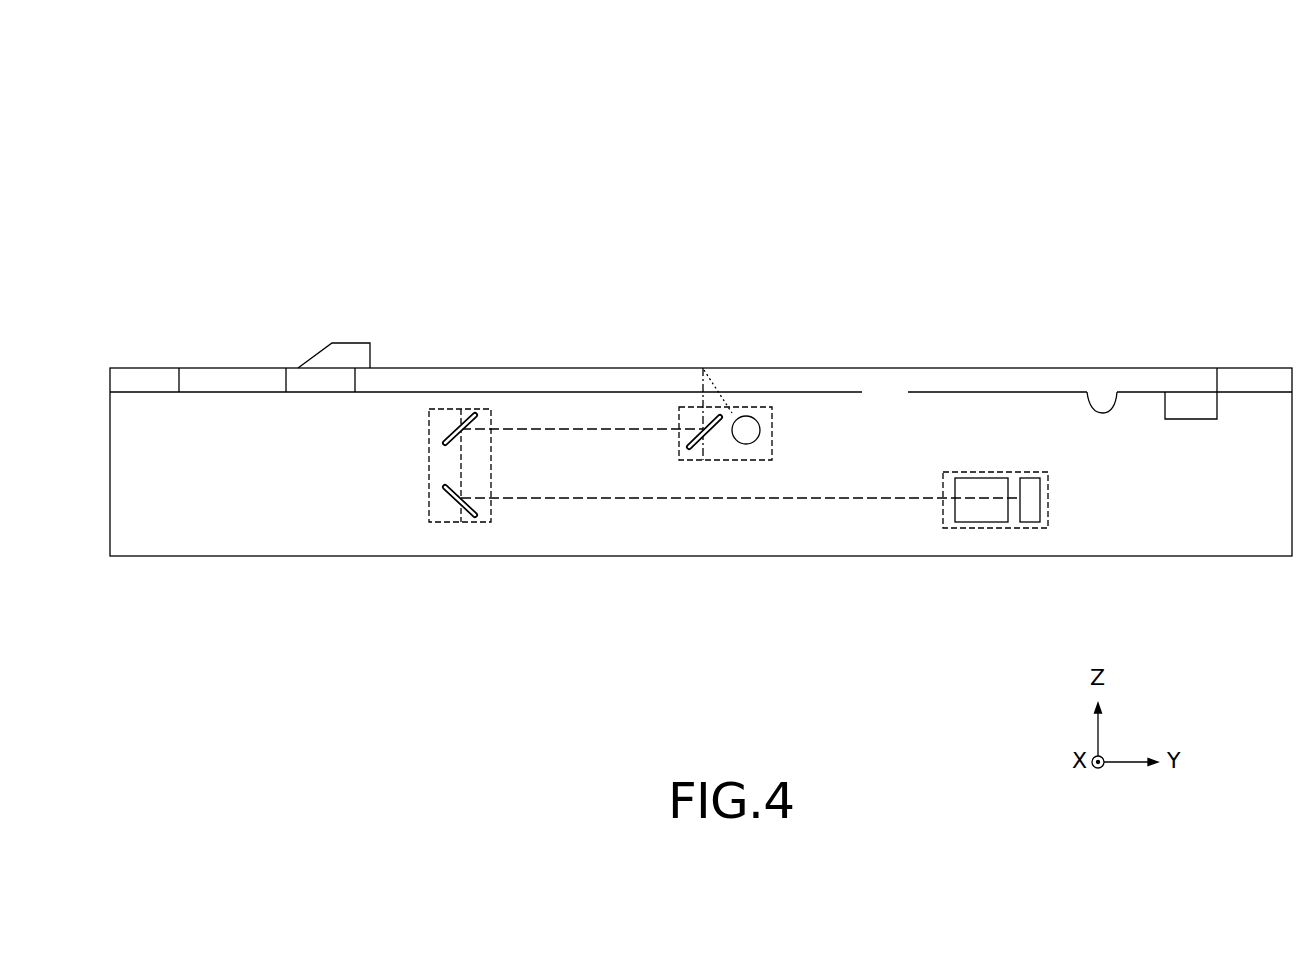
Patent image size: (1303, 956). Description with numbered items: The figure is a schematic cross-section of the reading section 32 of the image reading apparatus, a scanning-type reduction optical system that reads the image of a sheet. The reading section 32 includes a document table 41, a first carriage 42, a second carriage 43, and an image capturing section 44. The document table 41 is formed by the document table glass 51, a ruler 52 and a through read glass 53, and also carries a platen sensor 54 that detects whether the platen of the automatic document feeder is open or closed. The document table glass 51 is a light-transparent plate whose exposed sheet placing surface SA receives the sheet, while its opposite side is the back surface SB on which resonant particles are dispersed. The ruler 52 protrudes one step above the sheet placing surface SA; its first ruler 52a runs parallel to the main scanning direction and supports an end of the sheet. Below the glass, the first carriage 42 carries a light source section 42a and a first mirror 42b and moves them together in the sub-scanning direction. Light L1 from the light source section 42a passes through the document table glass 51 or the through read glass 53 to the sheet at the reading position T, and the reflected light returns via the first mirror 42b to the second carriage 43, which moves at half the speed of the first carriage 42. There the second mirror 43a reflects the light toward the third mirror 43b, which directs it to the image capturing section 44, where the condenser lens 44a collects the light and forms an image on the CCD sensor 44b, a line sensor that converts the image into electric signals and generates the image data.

The reading section 32 is at (1105, 124).
The document table 41 is at (870, 345).
The first carriage 42 is at (786, 443).
The light source section 42a is at (761, 441).
The first mirror 42b is at (707, 440).
The second carriage 43 is at (414, 508).
The second mirror 43a is at (440, 428).
The third mirror 43b is at (430, 505).
The image capturing section 44 is at (1051, 532).
The condenser lens 44a is at (980, 522).
The CCD sensor 44b is at (1040, 490).
The document table glass 51 is at (932, 382).
The ruler 52 is at (377, 295).
The first ruler 52a is at (345, 357).
The through read glass 53 is at (215, 380).
The platen sensor 54 is at (1193, 400).
The reading position T is at (696, 372).
The light L1 is at (725, 393).
The sheet placing surface SA is at (1048, 366).
The back surface SB is at (1117, 392).